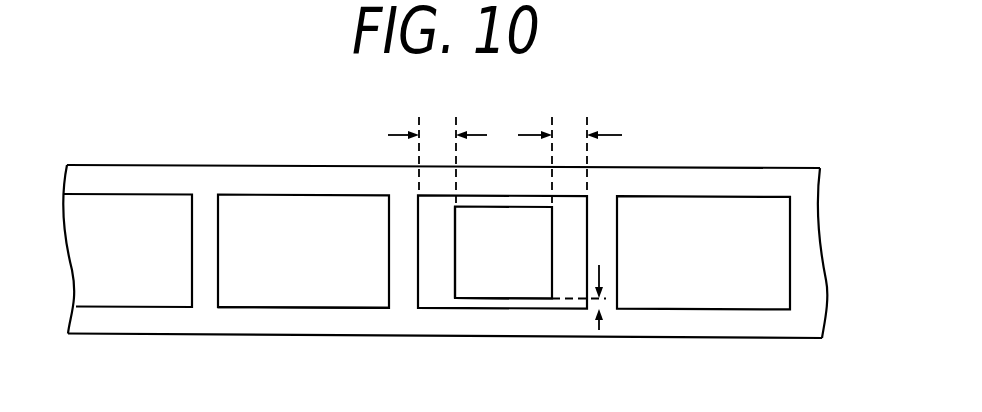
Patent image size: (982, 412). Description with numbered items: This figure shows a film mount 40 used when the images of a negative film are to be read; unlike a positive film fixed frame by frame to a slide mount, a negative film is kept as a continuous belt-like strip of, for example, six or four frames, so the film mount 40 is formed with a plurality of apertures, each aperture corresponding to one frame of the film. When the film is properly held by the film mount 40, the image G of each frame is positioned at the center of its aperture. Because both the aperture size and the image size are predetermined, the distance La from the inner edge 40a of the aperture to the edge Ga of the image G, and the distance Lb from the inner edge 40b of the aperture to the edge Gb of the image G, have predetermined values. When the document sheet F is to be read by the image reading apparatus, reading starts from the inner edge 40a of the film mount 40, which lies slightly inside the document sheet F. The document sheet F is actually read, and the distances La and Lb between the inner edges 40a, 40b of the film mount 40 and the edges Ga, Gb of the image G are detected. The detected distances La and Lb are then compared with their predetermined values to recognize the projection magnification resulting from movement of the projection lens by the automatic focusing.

The film mount 40 is at (750, 177).
The inner edge of the aperture 40a is at (218, 288).
The inner edge of the aperture 40b is at (322, 307).
The document sheet F is at (432, 228).
The image G is at (513, 264).
The edge of the image Ga is at (455, 277).
The edge of the image Gb is at (500, 298).
The distance La is at (505, 161).
The distance Lb is at (603, 302).